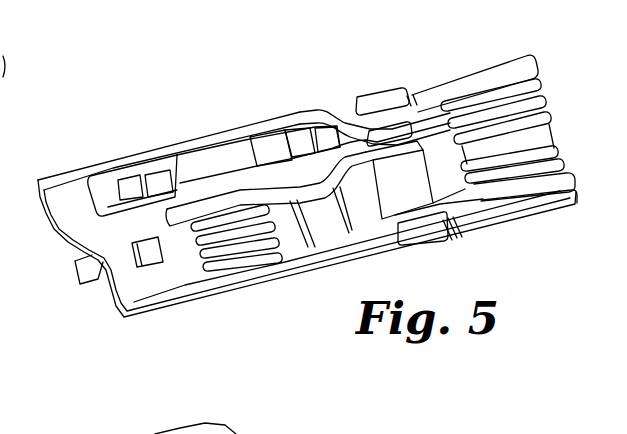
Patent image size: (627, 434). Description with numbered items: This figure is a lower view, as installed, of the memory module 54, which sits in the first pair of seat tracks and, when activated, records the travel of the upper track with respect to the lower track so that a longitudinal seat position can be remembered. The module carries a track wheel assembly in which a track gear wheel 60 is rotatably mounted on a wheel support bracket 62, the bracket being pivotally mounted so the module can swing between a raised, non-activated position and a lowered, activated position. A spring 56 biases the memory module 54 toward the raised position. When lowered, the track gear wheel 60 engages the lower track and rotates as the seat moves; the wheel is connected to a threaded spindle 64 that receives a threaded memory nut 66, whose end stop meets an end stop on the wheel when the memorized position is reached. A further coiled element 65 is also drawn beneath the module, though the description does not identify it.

The memory module 54 is at (317, 107).
The spring 56 is at (540, 104).
The track gear wheel 60 is at (202, 167).
The wheel support bracket 62 is at (102, 158).
The threaded spindle 64 is at (240, 147).
The compression spring 65 is at (240, 250).
The memory nut 66 is at (380, 146).